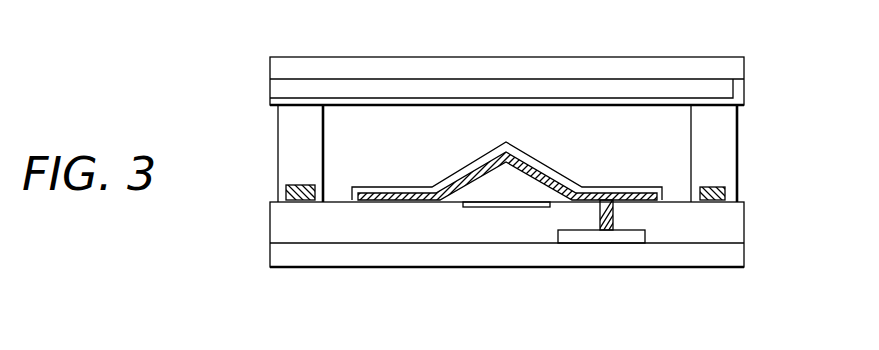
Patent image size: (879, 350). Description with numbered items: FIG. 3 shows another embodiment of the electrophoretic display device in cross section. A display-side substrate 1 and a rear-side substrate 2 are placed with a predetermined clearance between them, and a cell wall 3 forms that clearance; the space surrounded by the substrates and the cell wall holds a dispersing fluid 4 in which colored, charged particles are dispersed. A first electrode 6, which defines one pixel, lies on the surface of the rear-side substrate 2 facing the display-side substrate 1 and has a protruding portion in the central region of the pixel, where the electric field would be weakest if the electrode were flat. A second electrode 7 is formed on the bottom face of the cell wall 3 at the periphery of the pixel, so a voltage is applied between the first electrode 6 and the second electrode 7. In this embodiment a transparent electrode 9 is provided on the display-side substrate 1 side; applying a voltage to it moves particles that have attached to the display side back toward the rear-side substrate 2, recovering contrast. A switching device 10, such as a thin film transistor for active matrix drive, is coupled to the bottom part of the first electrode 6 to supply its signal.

The display-side substrate 1 is at (707, 72).
The rear-side substrate 2 is at (730, 258).
The cell wall 3 is at (712, 134).
The dispersing fluid 4 is at (620, 137).
The first electrode 6 is at (399, 204).
The second electrode 7 is at (303, 190).
The transparent electrode 9 is at (733, 86).
The switching device 10 is at (580, 237).